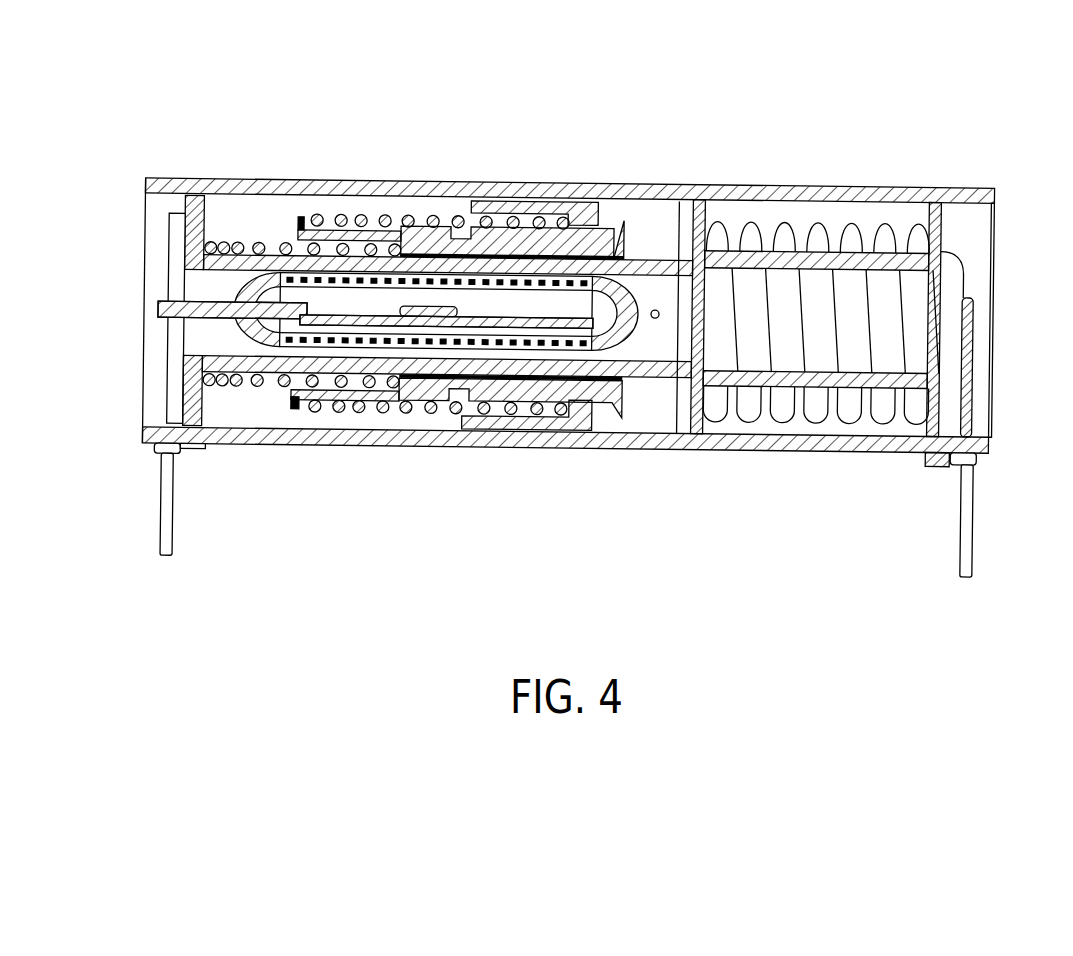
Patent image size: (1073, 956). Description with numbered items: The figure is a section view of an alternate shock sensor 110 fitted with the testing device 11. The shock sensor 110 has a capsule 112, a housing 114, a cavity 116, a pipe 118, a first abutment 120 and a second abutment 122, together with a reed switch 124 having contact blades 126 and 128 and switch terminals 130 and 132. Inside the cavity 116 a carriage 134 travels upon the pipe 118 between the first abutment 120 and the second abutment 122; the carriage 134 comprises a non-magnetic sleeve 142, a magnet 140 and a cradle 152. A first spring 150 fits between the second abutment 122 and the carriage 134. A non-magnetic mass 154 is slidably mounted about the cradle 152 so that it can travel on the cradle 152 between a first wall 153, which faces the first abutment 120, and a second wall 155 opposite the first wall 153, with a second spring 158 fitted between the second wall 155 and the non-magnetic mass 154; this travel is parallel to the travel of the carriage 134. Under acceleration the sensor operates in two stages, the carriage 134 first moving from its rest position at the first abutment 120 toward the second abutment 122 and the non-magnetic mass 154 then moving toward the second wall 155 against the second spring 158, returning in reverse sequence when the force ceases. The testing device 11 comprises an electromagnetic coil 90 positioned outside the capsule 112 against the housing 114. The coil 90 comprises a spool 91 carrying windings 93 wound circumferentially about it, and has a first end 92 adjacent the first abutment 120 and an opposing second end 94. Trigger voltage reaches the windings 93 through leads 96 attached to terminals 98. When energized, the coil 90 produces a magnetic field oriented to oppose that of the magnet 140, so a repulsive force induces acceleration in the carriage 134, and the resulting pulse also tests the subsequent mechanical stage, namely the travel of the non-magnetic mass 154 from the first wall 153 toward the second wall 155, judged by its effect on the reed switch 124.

The testing device 11 is at (822, 212).
The electromagnetic coil 90 is at (835, 420).
The spool 91 is at (928, 440).
The first end 92 is at (745, 420).
The windings 93 is at (792, 223).
The second end 94 is at (923, 190).
The leads 96 is at (964, 268).
The terminals 98 is at (973, 547).
The shock sensor 110 is at (563, 183).
The capsule 112 is at (528, 190).
The housing 114 is at (288, 445).
The cavity 116 is at (246, 213).
The pipe 118 is at (375, 402).
The first abutment 120 is at (655, 306).
The second abutment 122 is at (206, 213).
The reed switch 124 is at (412, 318).
The contact blade 126 is at (250, 270).
The contact blade 128 is at (557, 328).
The switch terminal 130 is at (157, 322).
The switch terminal 132 is at (650, 320).
The carriage 134 is at (455, 348).
The magnet 140 is at (520, 400).
The non-magnetic sleeve 142 is at (335, 405).
The first spring 150 is at (238, 395).
The cradle 152 is at (372, 186).
The first wall 153 is at (640, 327).
The non-magnetic mass 154 is at (520, 205).
The second wall 155 is at (295, 215).
The coil spring 158 is at (452, 215).